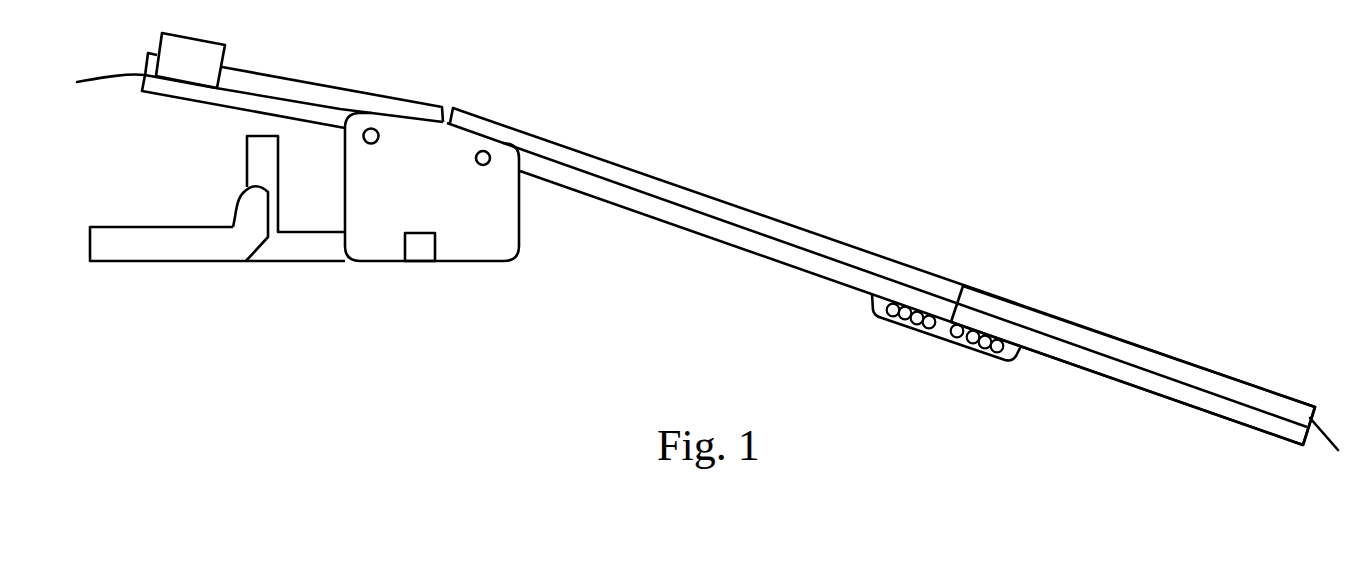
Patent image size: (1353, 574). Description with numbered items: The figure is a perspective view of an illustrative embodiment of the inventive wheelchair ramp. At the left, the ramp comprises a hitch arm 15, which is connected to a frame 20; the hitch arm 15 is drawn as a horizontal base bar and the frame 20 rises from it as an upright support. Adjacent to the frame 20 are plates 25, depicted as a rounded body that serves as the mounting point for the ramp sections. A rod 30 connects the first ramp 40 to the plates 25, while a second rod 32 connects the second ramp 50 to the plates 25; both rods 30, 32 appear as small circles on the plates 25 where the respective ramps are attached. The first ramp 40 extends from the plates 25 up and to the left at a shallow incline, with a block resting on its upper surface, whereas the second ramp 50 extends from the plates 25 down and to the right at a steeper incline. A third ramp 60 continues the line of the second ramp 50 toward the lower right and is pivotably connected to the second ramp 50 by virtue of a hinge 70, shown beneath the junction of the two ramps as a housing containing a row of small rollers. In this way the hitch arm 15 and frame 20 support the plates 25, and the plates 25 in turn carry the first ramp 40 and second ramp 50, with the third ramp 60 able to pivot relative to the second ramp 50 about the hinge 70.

The hitch arm 15 is at (168, 248).
The frame 20 is at (300, 250).
The plates 25 is at (487, 242).
The rod 30 is at (373, 129).
The rod 32 is at (490, 151).
The first ramp 40 is at (277, 85).
The second ramp 50 is at (708, 202).
The third ramp 60 is at (1090, 337).
The hinge 70 is at (947, 327).